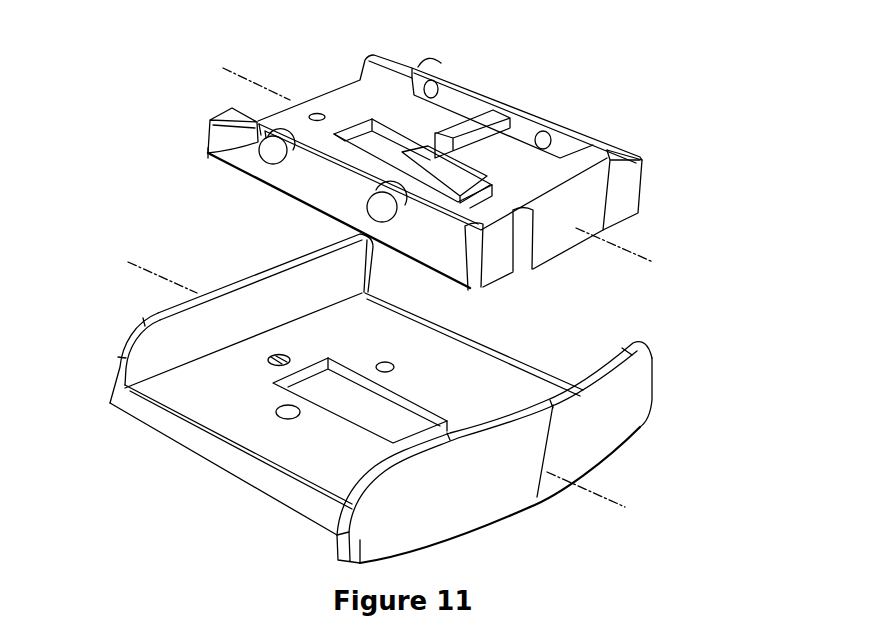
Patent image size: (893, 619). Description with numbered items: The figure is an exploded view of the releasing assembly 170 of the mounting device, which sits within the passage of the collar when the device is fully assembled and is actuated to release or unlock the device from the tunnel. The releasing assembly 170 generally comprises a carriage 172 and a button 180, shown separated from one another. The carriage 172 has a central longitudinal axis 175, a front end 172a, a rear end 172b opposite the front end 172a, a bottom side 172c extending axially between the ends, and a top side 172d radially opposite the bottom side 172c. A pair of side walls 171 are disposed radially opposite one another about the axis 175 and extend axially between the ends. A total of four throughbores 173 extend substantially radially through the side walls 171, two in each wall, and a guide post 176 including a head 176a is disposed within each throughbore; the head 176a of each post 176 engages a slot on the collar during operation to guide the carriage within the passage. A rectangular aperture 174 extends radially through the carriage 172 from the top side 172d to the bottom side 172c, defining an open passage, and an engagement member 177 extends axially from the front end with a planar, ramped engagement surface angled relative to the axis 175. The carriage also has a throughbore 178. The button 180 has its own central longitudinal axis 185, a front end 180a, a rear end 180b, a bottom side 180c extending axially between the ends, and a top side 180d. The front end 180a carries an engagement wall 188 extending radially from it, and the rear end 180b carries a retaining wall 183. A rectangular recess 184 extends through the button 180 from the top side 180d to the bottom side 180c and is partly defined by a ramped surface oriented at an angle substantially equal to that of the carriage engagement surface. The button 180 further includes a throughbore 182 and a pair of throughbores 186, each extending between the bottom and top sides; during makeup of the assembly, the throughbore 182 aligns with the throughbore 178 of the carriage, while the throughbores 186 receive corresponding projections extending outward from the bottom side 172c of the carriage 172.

The releasing assembly 170 is at (662, 85).
The side walls 171 is at (316, 180).
The carriage 172 is at (662, 178).
The front end 172a is at (634, 208).
The rear end 172b is at (209, 122).
The bottom side 172c is at (474, 289).
The top side 172d is at (524, 92).
The throughbores 173 is at (434, 80).
The rectangular aperture 174 is at (364, 113).
The central longitudinal axis 175 is at (262, 57).
The guide post 176 is at (262, 159).
The head 176a is at (208, 154).
The engagement member 177 is at (488, 144).
The throughbore 178 is at (317, 111).
The button 180 is at (674, 344).
The front end 180a is at (513, 492).
The rear end 180b is at (133, 316).
The bottom side 180c is at (306, 514).
The top side 180d is at (477, 379).
The throughbore 182 is at (265, 368).
The retaining wall 183 is at (258, 316).
The rectangular recess 184 is at (334, 419).
The central longitudinal axis 185 is at (141, 265).
The throughbores 186 is at (277, 419).
The engagement wall 188 is at (627, 412).